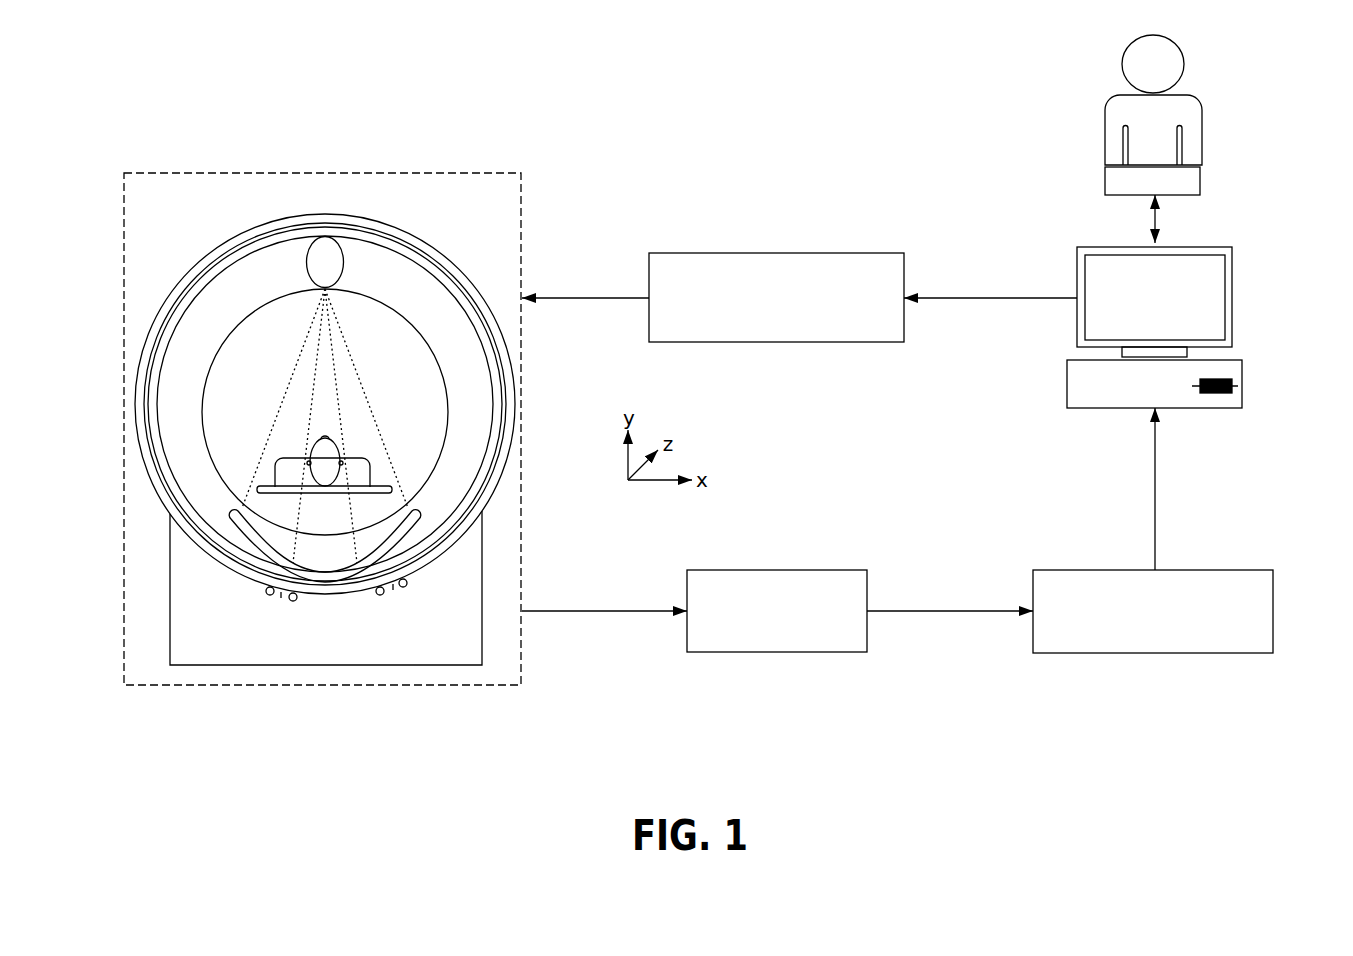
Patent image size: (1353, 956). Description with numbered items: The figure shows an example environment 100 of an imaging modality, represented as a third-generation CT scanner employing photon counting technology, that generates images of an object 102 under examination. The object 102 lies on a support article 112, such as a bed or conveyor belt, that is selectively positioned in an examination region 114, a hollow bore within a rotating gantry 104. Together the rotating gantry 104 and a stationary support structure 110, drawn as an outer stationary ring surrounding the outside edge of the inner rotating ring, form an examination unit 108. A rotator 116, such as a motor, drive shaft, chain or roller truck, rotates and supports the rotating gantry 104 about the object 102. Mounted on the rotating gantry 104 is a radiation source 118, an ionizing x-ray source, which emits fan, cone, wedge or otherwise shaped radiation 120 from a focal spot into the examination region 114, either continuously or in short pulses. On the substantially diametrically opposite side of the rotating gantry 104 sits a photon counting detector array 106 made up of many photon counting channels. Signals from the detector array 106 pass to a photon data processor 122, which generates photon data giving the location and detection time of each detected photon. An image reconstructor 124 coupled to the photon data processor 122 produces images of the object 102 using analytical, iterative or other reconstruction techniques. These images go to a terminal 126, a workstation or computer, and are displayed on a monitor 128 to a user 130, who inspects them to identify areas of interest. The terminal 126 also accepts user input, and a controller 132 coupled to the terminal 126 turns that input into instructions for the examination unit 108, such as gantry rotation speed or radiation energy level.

The example environment 100 is at (220, 93).
The object 102 is at (310, 445).
The rotating gantry 104 is at (255, 247).
The photon counting detector array 106 is at (252, 552).
The examination unit 108 is at (521, 173).
The support structure 110 is at (415, 238).
The support article 112 is at (265, 485).
The examination region 114 is at (320, 408).
The rotator 116 is at (407, 583).
The radiation source 118 is at (342, 268).
The radiation 120 is at (293, 372).
The photon data processor 122 is at (775, 652).
The image reconstructor 124 is at (1238, 570).
The terminal 126 is at (1240, 358).
The monitor 128 is at (1232, 247).
The user 130 is at (1202, 110).
The controller 132 is at (777, 253).